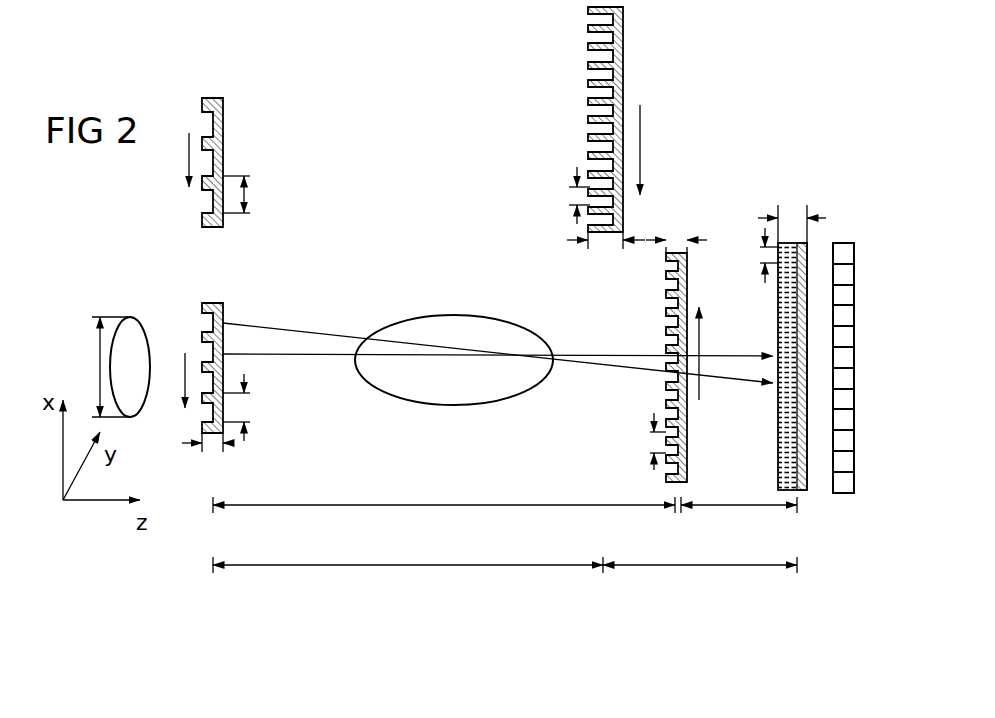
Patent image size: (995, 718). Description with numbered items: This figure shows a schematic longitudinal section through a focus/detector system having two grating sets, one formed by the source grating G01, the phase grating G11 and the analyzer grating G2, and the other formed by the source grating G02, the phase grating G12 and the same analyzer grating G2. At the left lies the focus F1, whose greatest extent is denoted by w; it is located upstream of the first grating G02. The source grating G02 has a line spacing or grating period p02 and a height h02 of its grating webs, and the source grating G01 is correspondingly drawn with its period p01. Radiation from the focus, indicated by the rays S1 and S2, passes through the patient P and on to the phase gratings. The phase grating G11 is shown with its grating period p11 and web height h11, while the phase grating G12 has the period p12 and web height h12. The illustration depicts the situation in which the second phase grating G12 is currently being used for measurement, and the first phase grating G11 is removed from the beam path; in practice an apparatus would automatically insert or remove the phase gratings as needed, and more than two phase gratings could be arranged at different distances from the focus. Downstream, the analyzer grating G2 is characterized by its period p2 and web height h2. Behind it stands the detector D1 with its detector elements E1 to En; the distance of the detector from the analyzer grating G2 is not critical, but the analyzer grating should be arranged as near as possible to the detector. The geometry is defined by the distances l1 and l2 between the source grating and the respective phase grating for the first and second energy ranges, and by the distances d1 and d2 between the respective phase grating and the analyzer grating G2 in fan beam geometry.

The focus F1 is at (135, 318).
The extent of the focus w is at (98, 360).
The source grating G01 is at (223, 110).
The period of the grating lines p01 is at (248, 196).
The source grating G02 is at (223, 306).
The period of the grating lines p02 is at (246, 410).
The height of the grating webs h02 is at (209, 448).
The first beam S1 is at (337, 328).
The second beam S2 is at (350, 360).
The patient P is at (453, 315).
The phase grating G11 is at (623, 46).
The period of the grating lines p11 is at (568, 196).
The height of the grating webs h11 is at (603, 245).
The phase grating G12 is at (687, 292).
The period of the grating lines p12 is at (648, 440).
The height of the grating webs h12 is at (673, 236).
The analyzer grating G2 is at (800, 490).
The period of the grating lines p2 is at (760, 248).
The height of the grating webs h2 is at (790, 206).
The detector D1 is at (848, 241).
The detector element E1 is at (840, 252).
The detector element En is at (845, 493).
The distance between source grating and phase grating l1 is at (445, 562).
The distance between source grating and phase grating l2 is at (445, 502).
The distance between phase grating and analyzer grating d1 is at (712, 562).
The distance between phase grating and analyzer grating d2 is at (726, 502).